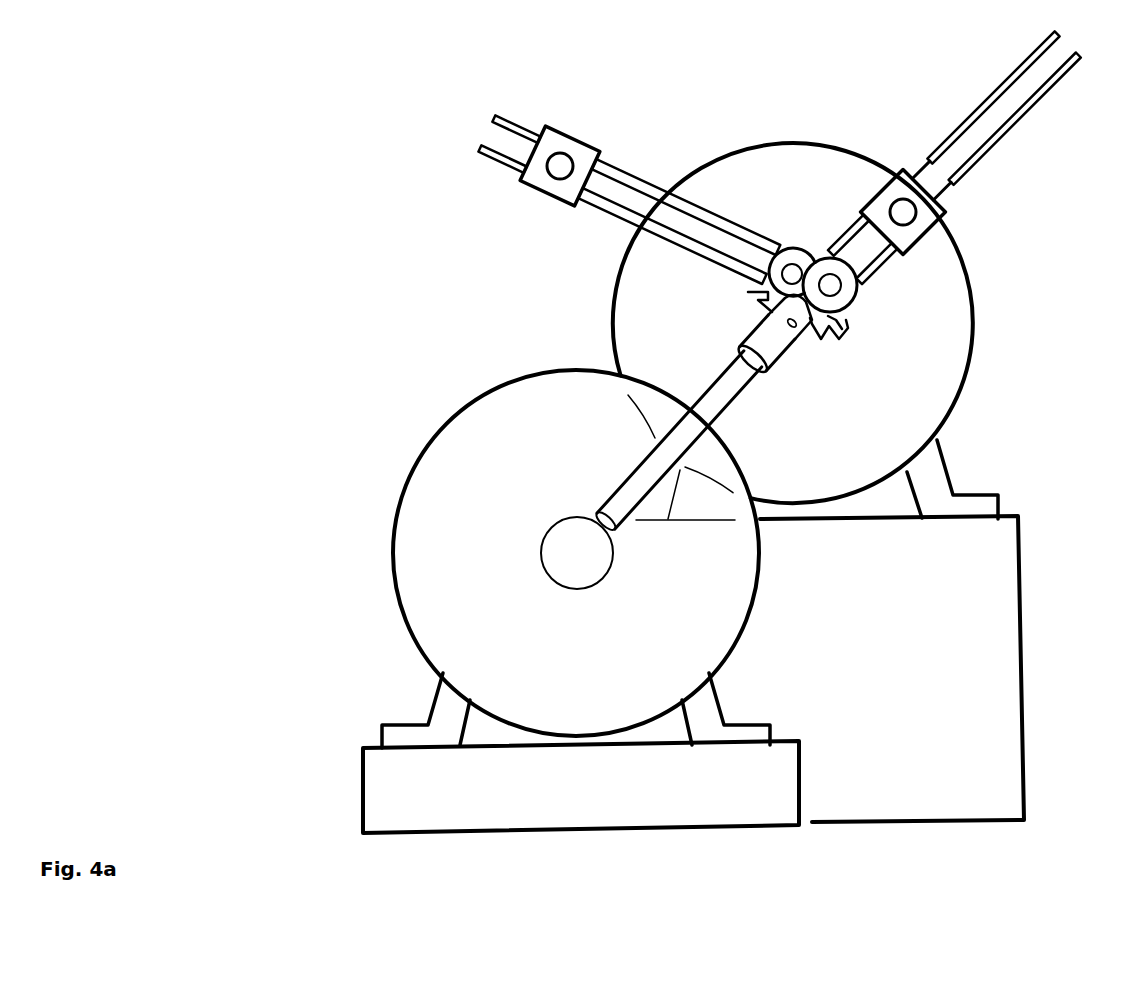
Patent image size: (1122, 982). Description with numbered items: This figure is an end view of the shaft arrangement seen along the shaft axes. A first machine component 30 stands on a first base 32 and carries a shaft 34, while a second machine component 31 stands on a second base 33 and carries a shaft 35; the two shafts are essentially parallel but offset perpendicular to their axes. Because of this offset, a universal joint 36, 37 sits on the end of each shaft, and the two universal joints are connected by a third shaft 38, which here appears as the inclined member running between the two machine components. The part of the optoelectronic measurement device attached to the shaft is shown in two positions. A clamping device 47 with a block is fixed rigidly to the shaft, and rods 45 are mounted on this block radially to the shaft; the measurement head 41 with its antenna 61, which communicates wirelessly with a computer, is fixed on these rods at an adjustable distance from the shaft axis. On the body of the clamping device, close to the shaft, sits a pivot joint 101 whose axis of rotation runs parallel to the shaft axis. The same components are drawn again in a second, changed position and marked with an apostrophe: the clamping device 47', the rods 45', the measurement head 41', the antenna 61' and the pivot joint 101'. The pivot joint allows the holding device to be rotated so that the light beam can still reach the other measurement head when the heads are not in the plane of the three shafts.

The first machine component 30 is at (767, 152).
The second machine component 31 is at (430, 483).
The first base 32 is at (928, 801).
The second base 33 is at (601, 805).
The shaft 34 is at (813, 321).
The shaft 35 is at (550, 548).
The universal joint 36 is at (777, 348).
The universal joint 37 is at (597, 512).
The third shaft 38 is at (740, 390).
The measurement head 41 is at (867, 180).
The measurement head 41' is at (489, 185).
The rods 45 is at (985, 103).
The rods 45' is at (679, 180).
The clamping device 47 is at (972, 298).
The clamping device 47' is at (576, 293).
The antenna 61 is at (890, 111).
The antenna 61' is at (458, 125).
The pivot joint 101 is at (960, 236).
The pivot joint 101' is at (735, 186).